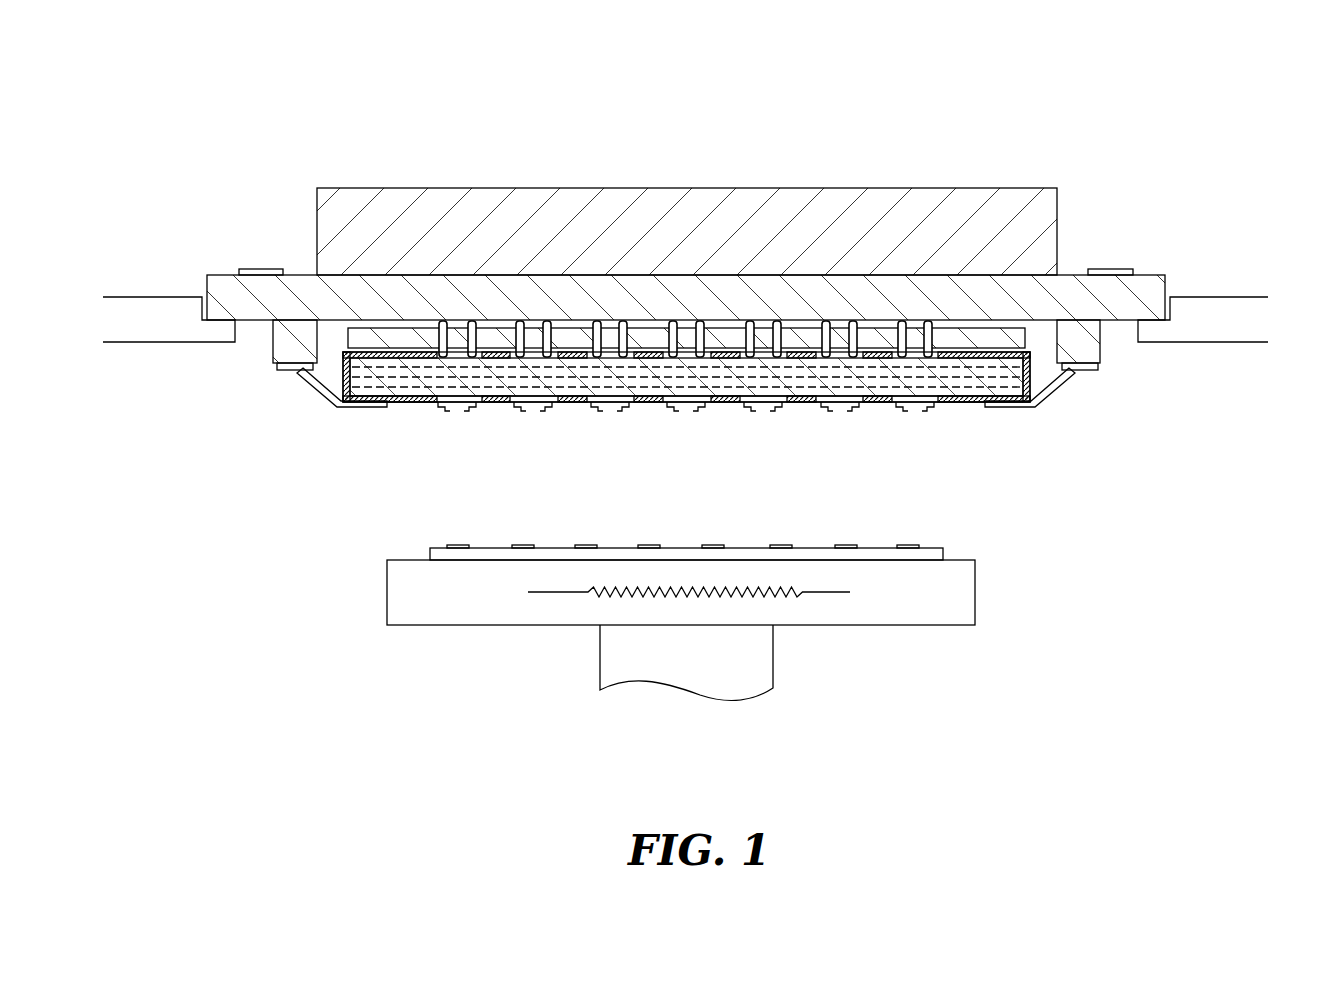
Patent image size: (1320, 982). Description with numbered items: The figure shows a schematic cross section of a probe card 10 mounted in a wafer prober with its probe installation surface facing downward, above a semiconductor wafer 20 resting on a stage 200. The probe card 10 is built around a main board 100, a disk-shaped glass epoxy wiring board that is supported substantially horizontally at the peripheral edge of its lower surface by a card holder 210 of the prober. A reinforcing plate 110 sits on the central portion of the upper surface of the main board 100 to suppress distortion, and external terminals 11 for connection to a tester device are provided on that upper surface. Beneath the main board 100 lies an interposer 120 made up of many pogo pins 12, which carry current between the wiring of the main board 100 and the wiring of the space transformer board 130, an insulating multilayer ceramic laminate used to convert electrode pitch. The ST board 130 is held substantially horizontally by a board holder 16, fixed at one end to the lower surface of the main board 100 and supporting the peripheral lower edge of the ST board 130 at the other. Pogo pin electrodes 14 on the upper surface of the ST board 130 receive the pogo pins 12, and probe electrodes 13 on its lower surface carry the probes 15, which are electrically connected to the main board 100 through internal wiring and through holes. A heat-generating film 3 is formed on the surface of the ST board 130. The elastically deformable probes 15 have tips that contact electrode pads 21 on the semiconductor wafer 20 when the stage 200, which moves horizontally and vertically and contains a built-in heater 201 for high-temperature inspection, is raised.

The probe card 10 is at (1117, 122).
The main board 100 is at (297, 275).
The reinforcing plate 110 is at (358, 188).
The interposer 120 is at (410, 328).
The external terminal 11 is at (258, 269).
The pogo pin 12 is at (552, 343).
The space transformer (ST) board 130 is at (372, 380).
The probe electrode 13 is at (513, 400).
The pogo pin electrode 14 is at (622, 357).
The probe 15 is at (671, 407).
The board holder 16 is at (1038, 402).
The heat-generating film 3 is at (800, 353).
The semiconductor wafer 20 is at (939, 548).
The electrode pad 21 is at (792, 548).
The stage 200 is at (975, 598).
The heater 201 is at (762, 598).
The card holder 210 is at (1213, 297).